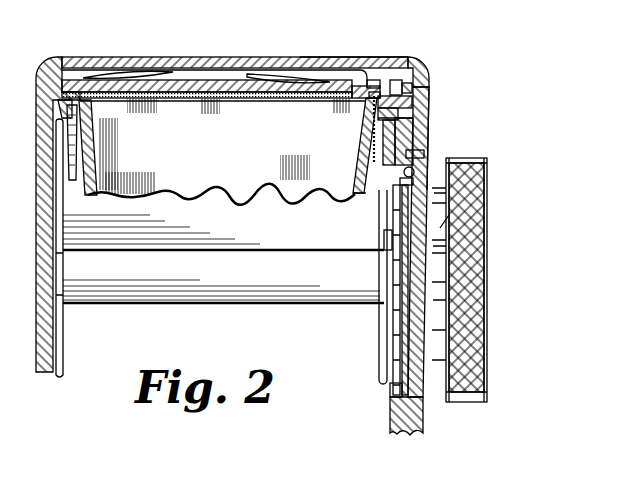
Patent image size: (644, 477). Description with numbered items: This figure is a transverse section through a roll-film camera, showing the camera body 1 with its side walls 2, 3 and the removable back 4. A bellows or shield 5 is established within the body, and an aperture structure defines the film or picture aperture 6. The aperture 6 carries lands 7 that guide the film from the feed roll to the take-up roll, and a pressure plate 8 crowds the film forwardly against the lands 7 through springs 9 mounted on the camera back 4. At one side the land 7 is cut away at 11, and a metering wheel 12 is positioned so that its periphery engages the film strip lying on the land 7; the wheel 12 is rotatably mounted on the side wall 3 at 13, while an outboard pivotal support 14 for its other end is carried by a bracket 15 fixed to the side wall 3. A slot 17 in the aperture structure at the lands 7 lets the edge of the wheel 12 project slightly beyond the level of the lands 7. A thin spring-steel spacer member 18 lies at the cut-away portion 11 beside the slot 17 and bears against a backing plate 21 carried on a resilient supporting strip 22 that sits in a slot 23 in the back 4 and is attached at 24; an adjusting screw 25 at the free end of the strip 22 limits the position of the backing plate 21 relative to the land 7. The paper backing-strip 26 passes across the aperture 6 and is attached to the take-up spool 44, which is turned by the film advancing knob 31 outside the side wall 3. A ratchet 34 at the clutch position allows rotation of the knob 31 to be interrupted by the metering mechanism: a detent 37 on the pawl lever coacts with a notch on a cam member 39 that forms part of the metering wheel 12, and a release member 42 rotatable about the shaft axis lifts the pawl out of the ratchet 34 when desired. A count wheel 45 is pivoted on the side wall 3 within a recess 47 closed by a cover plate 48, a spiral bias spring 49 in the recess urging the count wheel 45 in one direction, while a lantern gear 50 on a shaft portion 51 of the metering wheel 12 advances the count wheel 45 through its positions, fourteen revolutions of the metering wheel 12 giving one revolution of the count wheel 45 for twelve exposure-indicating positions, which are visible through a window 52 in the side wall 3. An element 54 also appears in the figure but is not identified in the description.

The camera body 1 is at (434, 97).
The side wall 2 is at (36, 177).
The side wall 3 is at (430, 130).
The removable back 4 is at (358, 60).
The bellows or shield 5 is at (90, 160).
The film or picture aperture 6 is at (85, 103).
The lands 7 is at (97, 99).
The pressure plate 8 is at (197, 82).
The springs 9 is at (285, 79).
The cut-away portion 11 is at (414, 110).
The metering wheel 12 is at (371, 148).
The rotatable mounting 13 is at (428, 163).
The outboard pivotal support 14 is at (372, 166).
The bracket 15 is at (362, 190).
The slot 17 is at (421, 128).
The spacer member 18 is at (362, 98).
The backing plate 21 is at (386, 83).
The resilient supporting strip 22 is at (327, 70).
The slot 23 is at (230, 70).
The attachment 24 is at (140, 76).
The adjusting screw 25 is at (424, 84).
The paper backing-strip 26 is at (214, 99).
The film advancing knob 31 is at (489, 167).
The ratchet 34 is at (391, 323).
The detent 37 is at (388, 236).
The cam member 39 is at (377, 104).
The release member 42 is at (487, 199).
The take-up spool 44 is at (223, 276).
The count wheel 45 is at (423, 395).
The recess 47 is at (392, 390).
The cover plate 48 is at (386, 378).
The bias spring 49 is at (398, 343).
The lantern gear 50 is at (422, 169).
The shaft portion 51 is at (424, 153).
The window 52 is at (432, 289).
The contact holder 54 is at (370, 82).